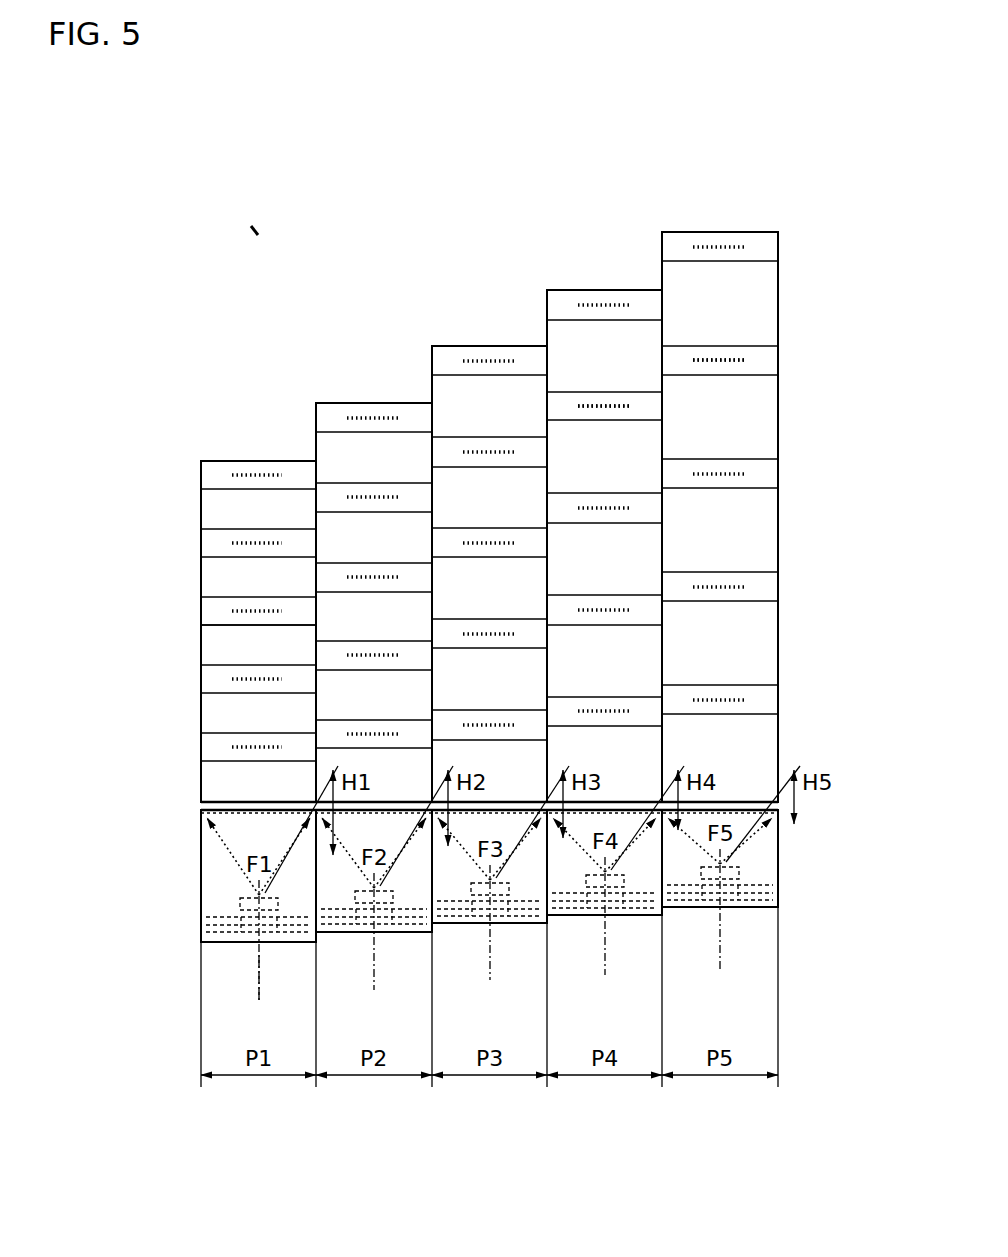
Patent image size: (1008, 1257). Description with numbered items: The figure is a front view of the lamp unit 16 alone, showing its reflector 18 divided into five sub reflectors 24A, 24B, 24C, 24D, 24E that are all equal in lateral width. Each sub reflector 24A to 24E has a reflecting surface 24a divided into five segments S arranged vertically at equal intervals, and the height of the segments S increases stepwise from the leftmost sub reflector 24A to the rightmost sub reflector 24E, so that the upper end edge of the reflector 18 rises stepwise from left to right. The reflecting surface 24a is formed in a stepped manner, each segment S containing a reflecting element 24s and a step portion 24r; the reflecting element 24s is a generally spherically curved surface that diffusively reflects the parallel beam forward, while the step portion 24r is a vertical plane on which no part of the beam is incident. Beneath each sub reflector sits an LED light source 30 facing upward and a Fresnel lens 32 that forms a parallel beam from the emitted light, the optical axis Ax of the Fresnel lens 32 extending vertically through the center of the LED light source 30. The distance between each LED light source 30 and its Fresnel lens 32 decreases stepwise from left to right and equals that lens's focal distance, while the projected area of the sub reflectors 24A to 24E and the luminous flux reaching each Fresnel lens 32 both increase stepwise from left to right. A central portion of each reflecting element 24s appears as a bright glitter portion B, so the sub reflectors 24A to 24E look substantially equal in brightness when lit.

The lamp unit 16 is at (253, 228).
The reflector 18 is at (210, 458).
The sub reflector 24A is at (220, 574).
The sub reflector 24B is at (365, 401).
The sub reflector 24C is at (481, 344).
The sub reflector 24D is at (598, 288).
The sub reflector 24E is at (713, 230).
The reflecting surface 24a is at (355, 701).
The reflecting element 24s is at (762, 473).
The step portion 24r is at (762, 533).
The LED light source 30 is at (254, 893).
The Fresnel lens 32 is at (230, 805).
The segment S is at (243, 595).
The glitter portion B is at (615, 400).
The optical axis Ax is at (258, 971).